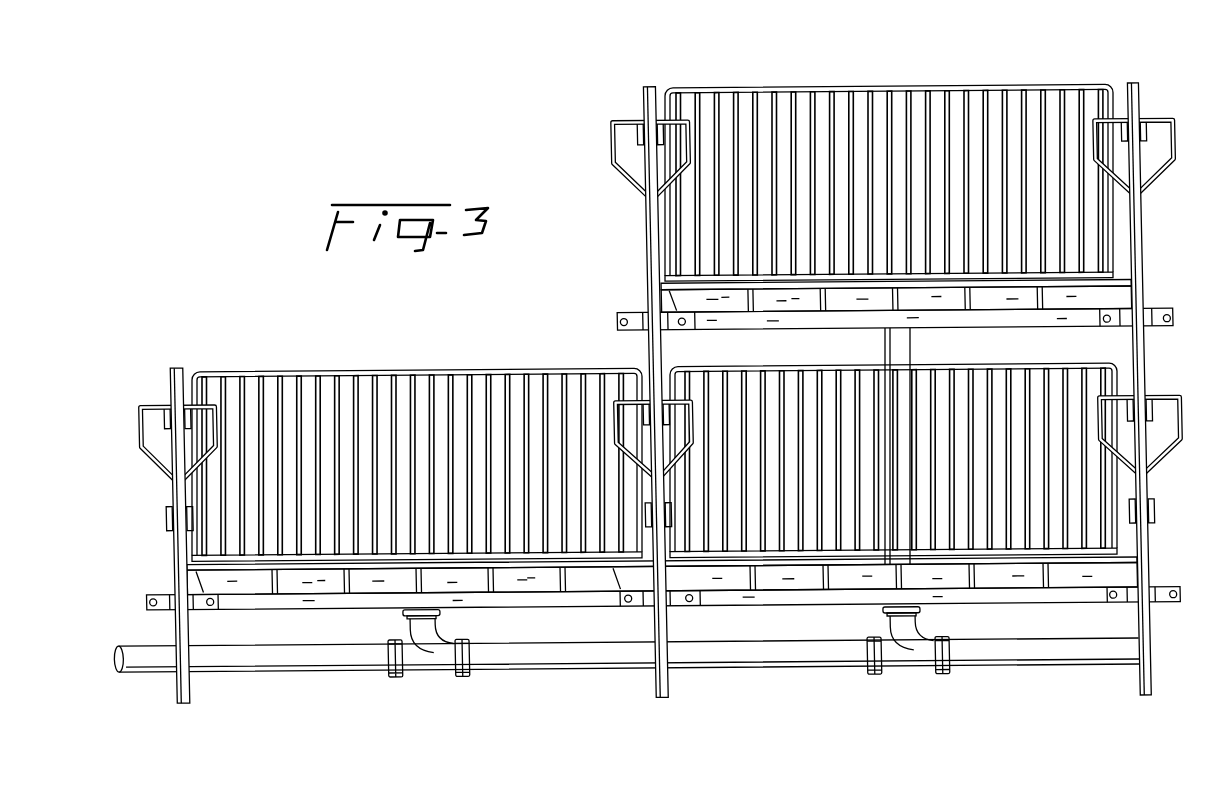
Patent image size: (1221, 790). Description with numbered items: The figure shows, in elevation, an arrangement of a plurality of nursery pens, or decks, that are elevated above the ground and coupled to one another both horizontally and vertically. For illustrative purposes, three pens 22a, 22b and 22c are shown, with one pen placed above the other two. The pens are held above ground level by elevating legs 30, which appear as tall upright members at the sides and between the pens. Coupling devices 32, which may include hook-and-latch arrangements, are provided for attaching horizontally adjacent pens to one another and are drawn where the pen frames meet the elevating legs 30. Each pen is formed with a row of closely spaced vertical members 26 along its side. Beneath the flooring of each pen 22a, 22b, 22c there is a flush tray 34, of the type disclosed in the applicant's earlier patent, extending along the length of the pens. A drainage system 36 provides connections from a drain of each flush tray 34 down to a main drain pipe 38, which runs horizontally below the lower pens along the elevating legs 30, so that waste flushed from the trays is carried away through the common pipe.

The pen 22a is at (856, 88).
The pen 22b is at (1118, 366).
The pen 22c is at (348, 369).
The vertical rods 26 is at (947, 123).
The elevating legs 30 is at (183, 690).
The coupling devices 32 is at (153, 405).
The flush trays 34 is at (212, 580).
The drainage system 36 is at (380, 623).
The main drain pipe 38 is at (332, 673).